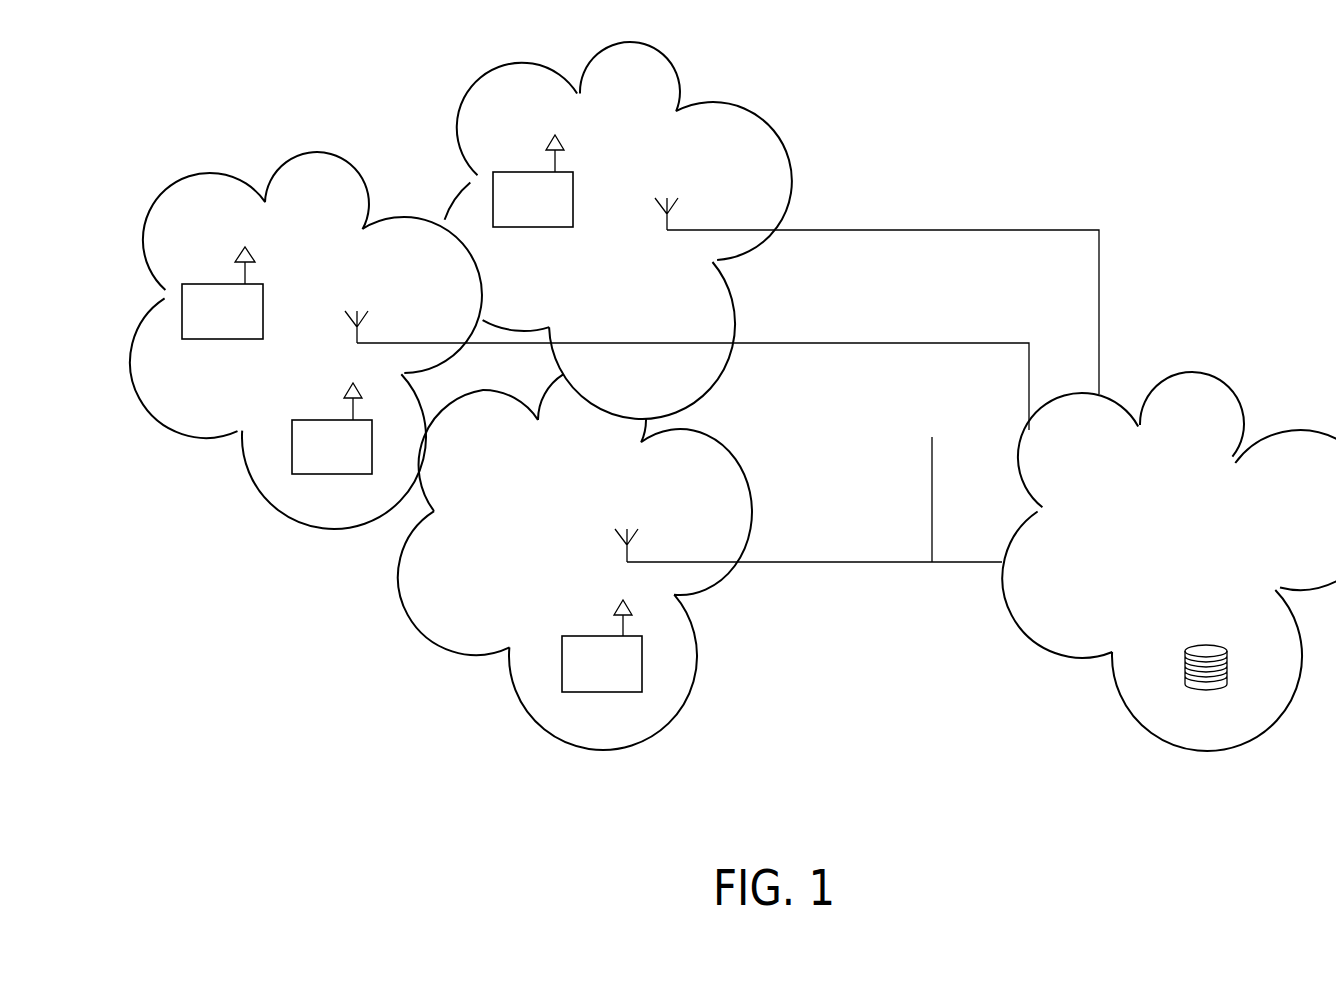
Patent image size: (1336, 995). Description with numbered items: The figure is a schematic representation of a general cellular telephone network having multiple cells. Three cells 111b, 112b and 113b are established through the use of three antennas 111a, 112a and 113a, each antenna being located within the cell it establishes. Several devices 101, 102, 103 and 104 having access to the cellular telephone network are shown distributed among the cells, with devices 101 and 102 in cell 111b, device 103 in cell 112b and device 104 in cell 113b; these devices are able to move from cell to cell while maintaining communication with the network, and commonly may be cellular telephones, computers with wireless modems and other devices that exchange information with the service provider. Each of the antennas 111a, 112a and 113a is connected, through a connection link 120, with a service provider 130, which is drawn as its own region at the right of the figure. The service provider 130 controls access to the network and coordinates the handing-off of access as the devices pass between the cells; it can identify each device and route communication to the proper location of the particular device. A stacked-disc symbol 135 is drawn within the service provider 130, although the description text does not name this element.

The device 101 is at (222, 340).
The device 102 is at (330, 420).
The device 103 is at (600, 636).
The device 104 is at (533, 227).
The antenna 111a is at (360, 330).
The cell 111b is at (353, 513).
The antenna 112a is at (630, 552).
The cell 112b is at (503, 449).
The antenna 113a is at (670, 213).
The cell 113b is at (648, 99).
The connection link 120 is at (1099, 362).
The service provider 130 is at (1082, 595).
The database 135 is at (1213, 635).